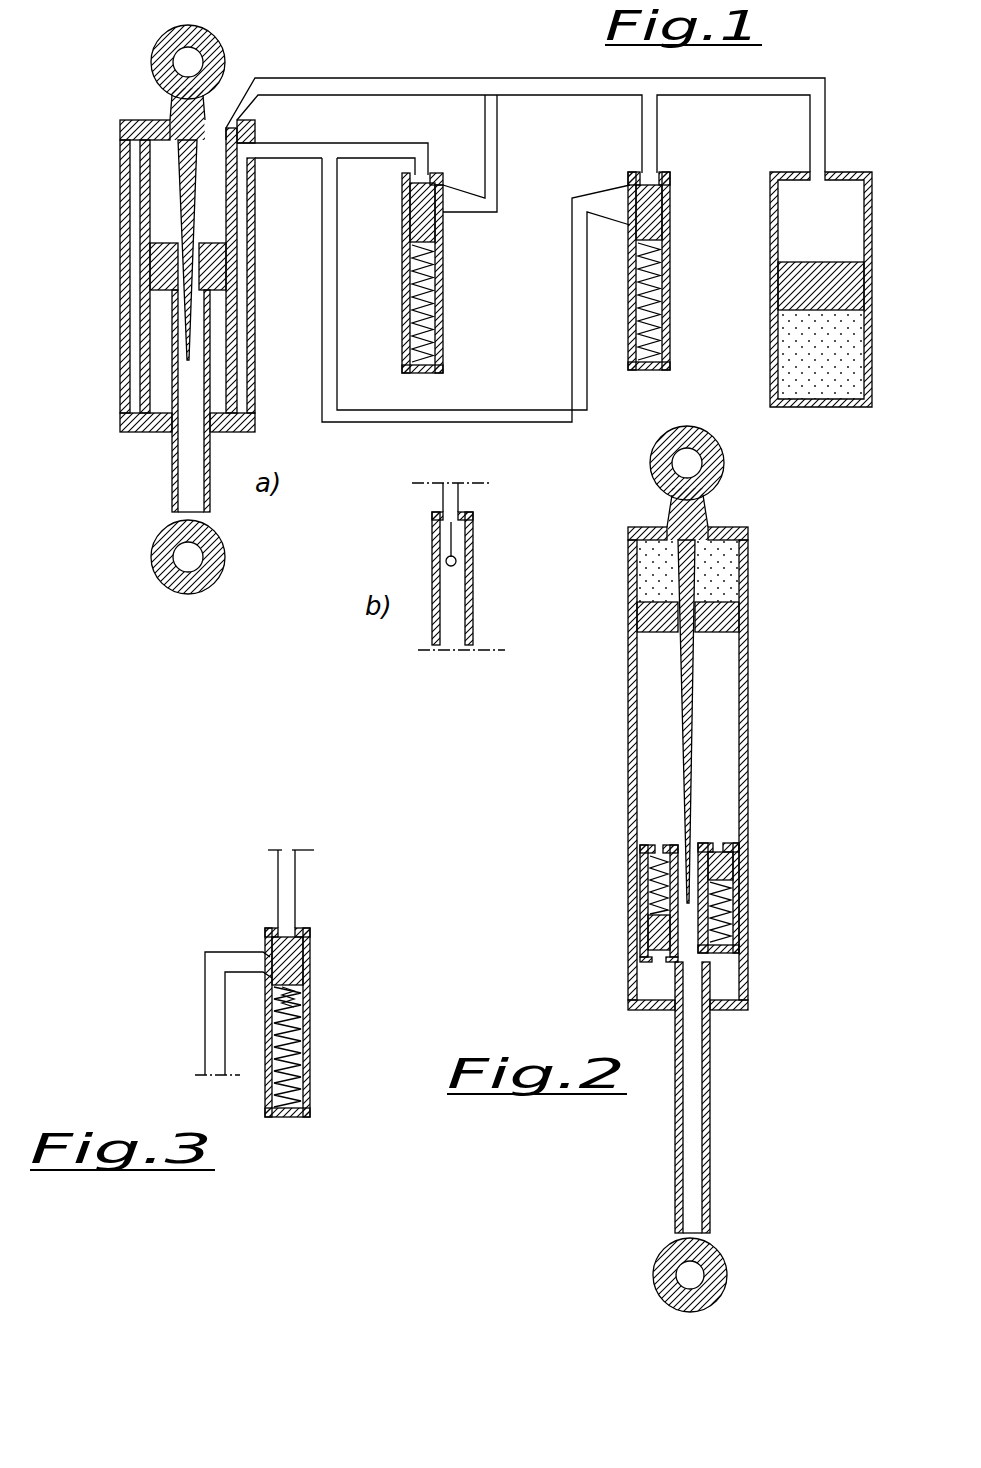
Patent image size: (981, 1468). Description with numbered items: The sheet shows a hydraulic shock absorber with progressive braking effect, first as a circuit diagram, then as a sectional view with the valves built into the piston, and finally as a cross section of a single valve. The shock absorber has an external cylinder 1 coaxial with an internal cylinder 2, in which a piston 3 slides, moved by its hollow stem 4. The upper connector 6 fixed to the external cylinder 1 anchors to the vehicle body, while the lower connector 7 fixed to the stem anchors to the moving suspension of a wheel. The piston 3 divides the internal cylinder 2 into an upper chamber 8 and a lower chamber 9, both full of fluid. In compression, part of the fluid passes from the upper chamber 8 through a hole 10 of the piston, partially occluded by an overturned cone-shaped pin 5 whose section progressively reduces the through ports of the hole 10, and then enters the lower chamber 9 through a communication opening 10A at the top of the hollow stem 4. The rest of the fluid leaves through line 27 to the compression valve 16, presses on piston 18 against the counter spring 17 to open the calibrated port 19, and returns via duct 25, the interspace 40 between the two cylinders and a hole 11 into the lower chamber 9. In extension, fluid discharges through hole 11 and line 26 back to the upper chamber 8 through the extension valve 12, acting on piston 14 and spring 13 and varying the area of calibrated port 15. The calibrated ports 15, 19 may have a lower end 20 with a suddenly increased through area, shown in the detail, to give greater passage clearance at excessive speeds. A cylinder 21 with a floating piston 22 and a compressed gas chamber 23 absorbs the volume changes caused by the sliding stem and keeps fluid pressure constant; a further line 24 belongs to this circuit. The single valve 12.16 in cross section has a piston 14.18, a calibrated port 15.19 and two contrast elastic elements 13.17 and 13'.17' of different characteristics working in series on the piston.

In FIG. 1, the external cylinder 1 is at (123, 207).
In FIG. 2, the external cylinder 1 is at (632, 707).
In FIG. 1, the internal cylinder 2 is at (140, 362).
In FIG. 1, the piston 3 is at (148, 267).
In FIG. 1, the stem 4 is at (173, 473).
In FIG. 2, the stem 4 is at (707, 1120).
In FIG. 1, the pin 5 is at (185, 163).
In FIG. 2, the pin 5 is at (688, 672).
In FIG. 1, the upper connector 6 is at (157, 63).
In FIG. 2, the upper connector 6 is at (658, 473).
In FIG. 1, the lower connector 7 is at (193, 588).
In FIG. 2, the lower connector 7 is at (723, 1266).
In FIG. 1, the upper chamber 8 is at (215, 188).
In FIG. 1, the lower chamber 9 is at (220, 338).
In FIG. 1, the hole 10 is at (203, 242).
In FIG. 2, the hole 10 is at (680, 838).
In FIG. 1, the communication opening 10A is at (170, 302).
In FIG. 2, the communication opening 10A is at (678, 975).
In FIG. 1, the hole 11 is at (233, 400).
In FIG. 1, the extension valve 12 is at (443, 327).
In FIG. 1, the spring 13 is at (393, 303).
In FIG. 2, the spring 13 is at (625, 903).
In FIG. 1, the piston 14 is at (417, 218).
In FIG. 2, the piston 14 is at (648, 937).
In FIG. 1, the calibrated port 15 is at (452, 205).
In FIG. 1, the compression valve 16 is at (662, 348).
In FIG. 1, the spring 17 is at (647, 282).
In FIG. 2, the spring 17 is at (740, 908).
In FIG. 1, the piston 18 is at (648, 215).
In FIG. 2, the piston 18 is at (737, 862).
In FIG. 1, the calibrated port 19 is at (630, 207).
In FIG. 1, the lower end 20 is at (455, 565).
In FIG. 1, the cylinder 21 is at (770, 195).
In FIG. 1, the floating piston 22 is at (795, 290).
In FIG. 2, the floating piston 22 is at (727, 613).
In FIG. 1, the chamber 23 is at (823, 368).
In FIG. 2, the chamber 23 is at (723, 562).
In FIG. 1, the pipe 24 is at (492, 165).
In FIG. 1, the duct 25 is at (572, 380).
In FIG. 1, the line 26 is at (363, 143).
In FIG. 1, the line 27 is at (373, 87).
In FIG. 1, the interspace 40 is at (135, 393).
In FIG. 3, the extension or compression valve 12.16 is at (310, 1097).
In FIG. 3, the contrast elastic component 13.17 is at (305, 1062).
In FIG. 3, the additional contrast element 13'.17' is at (340, 1003).
In FIG. 3, the valve piston 14.18 is at (303, 958).
In FIG. 1, the calibrated port 15.19 is at (452, 536).
In FIG. 3, the calibrated port 15.19 is at (265, 945).